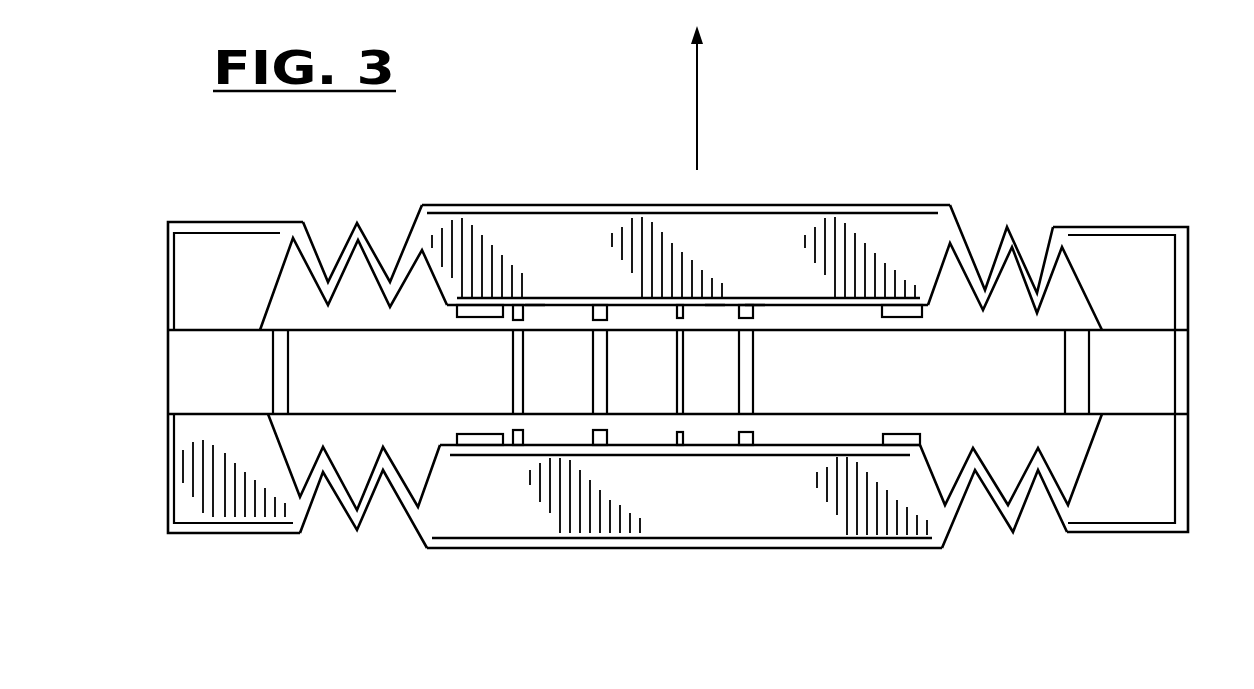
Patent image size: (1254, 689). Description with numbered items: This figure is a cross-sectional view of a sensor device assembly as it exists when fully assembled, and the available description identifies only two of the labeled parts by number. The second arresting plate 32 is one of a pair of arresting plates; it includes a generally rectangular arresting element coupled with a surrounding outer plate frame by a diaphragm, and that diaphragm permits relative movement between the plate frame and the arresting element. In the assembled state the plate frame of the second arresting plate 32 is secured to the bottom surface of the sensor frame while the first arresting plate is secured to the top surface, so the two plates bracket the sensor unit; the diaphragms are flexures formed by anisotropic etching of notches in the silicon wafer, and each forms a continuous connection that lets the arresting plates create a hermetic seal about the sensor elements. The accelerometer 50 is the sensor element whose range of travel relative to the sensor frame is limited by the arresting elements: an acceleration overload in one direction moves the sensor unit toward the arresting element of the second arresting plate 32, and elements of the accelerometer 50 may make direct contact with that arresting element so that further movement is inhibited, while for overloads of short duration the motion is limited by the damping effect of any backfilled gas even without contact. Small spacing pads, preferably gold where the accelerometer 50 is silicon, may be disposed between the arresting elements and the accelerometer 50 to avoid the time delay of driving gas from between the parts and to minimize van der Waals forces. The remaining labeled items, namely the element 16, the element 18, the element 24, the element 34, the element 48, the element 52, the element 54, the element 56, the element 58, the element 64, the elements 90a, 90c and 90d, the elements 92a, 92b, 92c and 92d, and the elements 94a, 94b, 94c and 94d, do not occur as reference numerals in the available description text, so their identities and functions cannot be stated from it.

The tube 16 is at (167, 362).
The vibration damper assembly 18 is at (674, 634).
The direction of vibration 24 is at (724, 92).
The second arresting plate 32 is at (594, 246).
The lower housing half 34 is at (589, 484).
The upper mass body 48 is at (755, 266).
The accelerometer 50 is at (222, 260).
The upper bellows 52 is at (363, 225).
The lower mass body 54 is at (722, 538).
The damping material 56 is at (208, 502).
The lower bellows 58 is at (351, 531).
The end wall 64 is at (183, 283).
The recess 90a is at (533, 300).
The recess 90c is at (717, 303).
The recess 90d is at (753, 310).
The post 92a is at (517, 443).
The post 92b is at (605, 432).
The post 92c is at (673, 437).
The post 92d is at (737, 437).
The pad 94a is at (473, 307).
The pad 94b is at (900, 313).
The pad 94c is at (475, 436).
The pad 94d is at (900, 442).